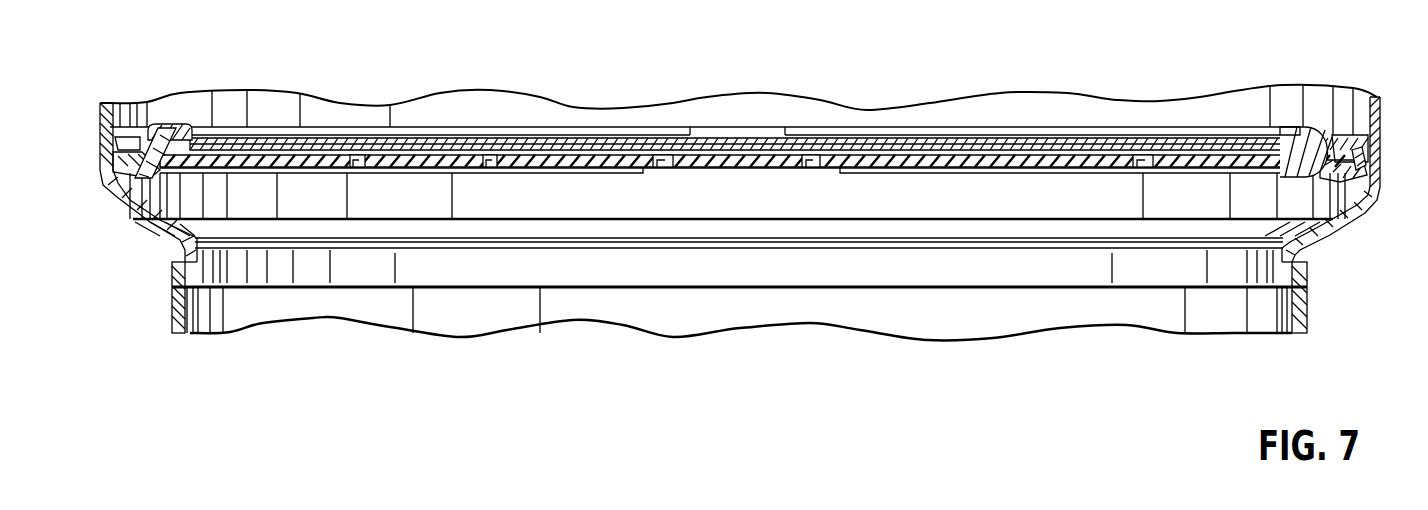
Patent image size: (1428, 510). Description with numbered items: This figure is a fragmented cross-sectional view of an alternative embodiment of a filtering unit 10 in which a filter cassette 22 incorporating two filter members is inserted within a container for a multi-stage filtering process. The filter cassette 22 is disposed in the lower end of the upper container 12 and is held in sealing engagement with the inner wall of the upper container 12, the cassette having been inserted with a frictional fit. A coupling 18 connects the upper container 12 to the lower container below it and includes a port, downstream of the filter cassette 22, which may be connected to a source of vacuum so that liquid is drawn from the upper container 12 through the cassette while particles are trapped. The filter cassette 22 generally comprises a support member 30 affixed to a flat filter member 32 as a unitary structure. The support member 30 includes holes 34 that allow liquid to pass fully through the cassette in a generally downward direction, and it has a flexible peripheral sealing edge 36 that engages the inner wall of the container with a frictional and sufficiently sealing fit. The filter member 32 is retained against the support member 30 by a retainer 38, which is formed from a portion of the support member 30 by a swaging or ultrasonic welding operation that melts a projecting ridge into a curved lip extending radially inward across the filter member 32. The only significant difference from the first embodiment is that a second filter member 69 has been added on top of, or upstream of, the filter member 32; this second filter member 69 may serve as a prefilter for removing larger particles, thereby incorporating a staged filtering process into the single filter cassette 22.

The filtering unit 10 is at (945, 65).
The upper container 12 is at (1375, 100).
The coupling 18 is at (1307, 283).
The filter cassette 22 is at (1307, 122).
The support member 30 is at (360, 162).
The filter member 32 is at (480, 158).
The holes 34 is at (665, 168).
The peripheral sealing edge 36 is at (1353, 170).
The retainer 38 is at (170, 127).
The second filter member 69 is at (750, 140).